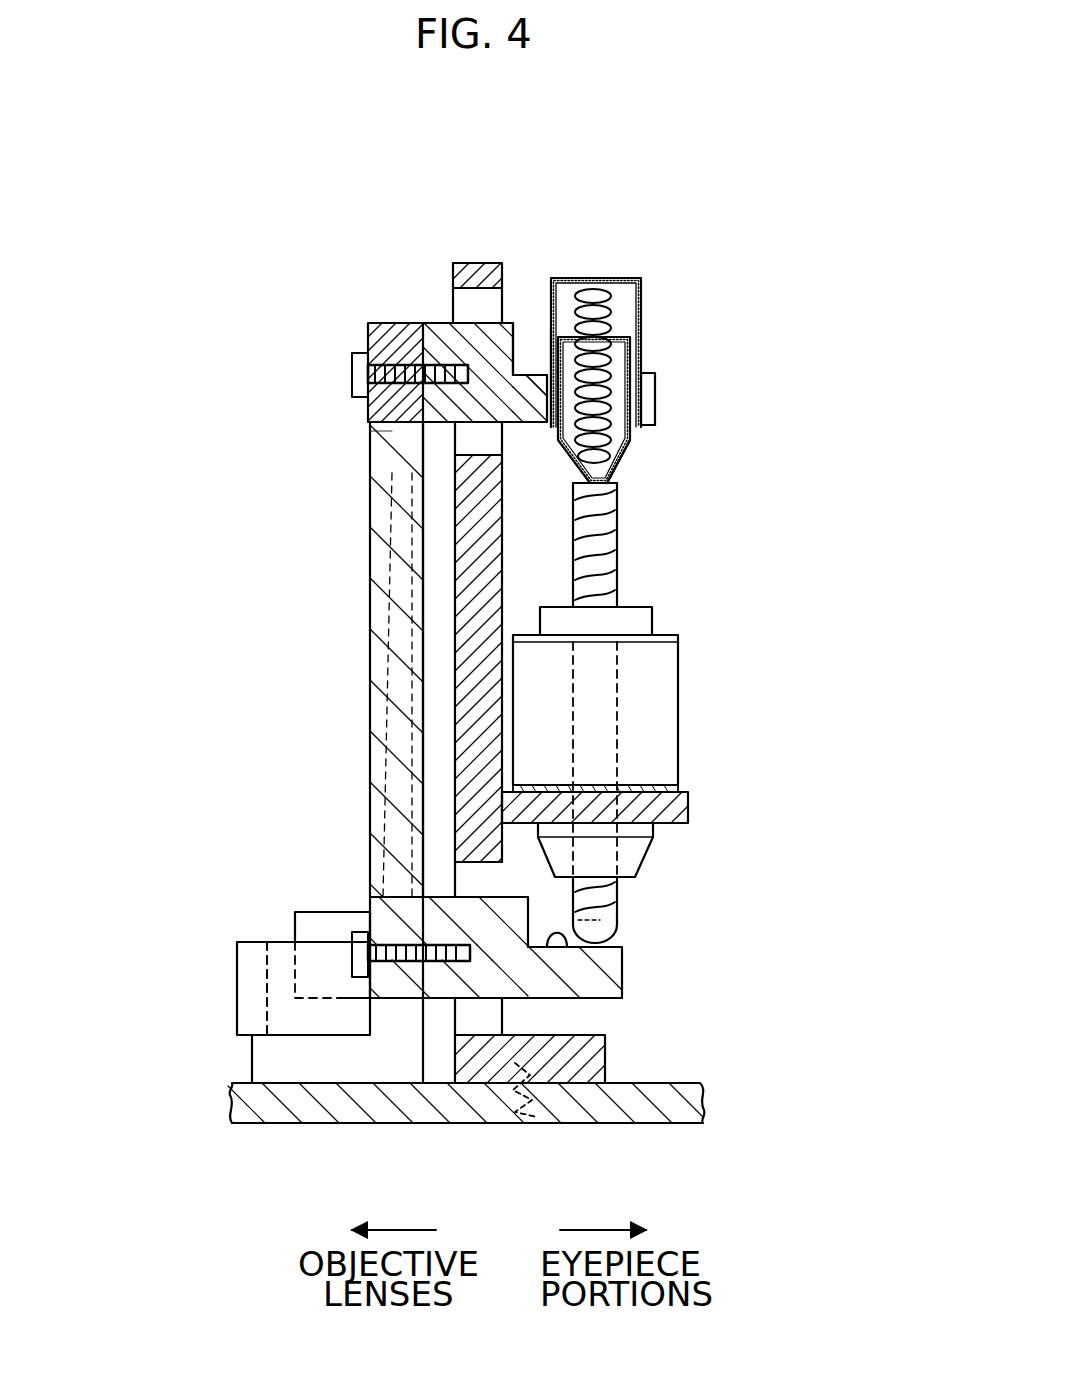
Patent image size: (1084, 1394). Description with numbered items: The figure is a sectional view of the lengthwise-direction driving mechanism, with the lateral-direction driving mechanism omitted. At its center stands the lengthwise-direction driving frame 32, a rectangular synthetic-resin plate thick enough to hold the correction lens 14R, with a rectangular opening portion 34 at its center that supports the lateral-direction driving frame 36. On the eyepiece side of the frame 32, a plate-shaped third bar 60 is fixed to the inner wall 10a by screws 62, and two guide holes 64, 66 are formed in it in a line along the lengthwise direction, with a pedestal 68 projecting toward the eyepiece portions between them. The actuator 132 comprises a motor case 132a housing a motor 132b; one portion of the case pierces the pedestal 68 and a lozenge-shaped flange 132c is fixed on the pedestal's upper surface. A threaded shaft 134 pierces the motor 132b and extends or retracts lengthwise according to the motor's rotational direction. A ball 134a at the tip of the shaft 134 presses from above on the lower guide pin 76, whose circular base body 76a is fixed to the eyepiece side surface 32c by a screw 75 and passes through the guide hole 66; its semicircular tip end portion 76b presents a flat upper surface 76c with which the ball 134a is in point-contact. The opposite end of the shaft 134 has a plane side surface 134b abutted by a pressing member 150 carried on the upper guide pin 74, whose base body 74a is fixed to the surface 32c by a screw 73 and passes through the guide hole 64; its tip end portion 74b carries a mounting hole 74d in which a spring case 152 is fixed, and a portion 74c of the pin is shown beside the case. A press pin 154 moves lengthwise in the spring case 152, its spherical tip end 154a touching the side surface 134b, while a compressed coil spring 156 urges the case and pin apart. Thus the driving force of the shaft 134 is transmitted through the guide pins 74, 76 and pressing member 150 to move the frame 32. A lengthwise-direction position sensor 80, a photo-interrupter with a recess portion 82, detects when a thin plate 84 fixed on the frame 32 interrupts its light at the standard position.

The inner wall 10a is at (645, 1122).
The correction lens 14R is at (380, 712).
The lengthwise-direction driving frame 32 is at (360, 351).
The eyepiece side surface 32c is at (427, 322).
The opening portion 34 is at (390, 432).
The lateral-direction driving frame 36 is at (382, 462).
The third bar 60 is at (478, 261).
The screw 62 is at (523, 1117).
The guide hole 64 is at (453, 290).
The guide hole 66 is at (478, 1024).
The pedestal 68 is at (688, 810).
The screw 73 is at (352, 373).
The upper guide pin 74 is at (657, 400).
The base body 74a is at (518, 358).
The tip end portion 74b is at (535, 398).
The flange of eyepiece tube 74c is at (655, 375).
The mounting hole 74d is at (632, 430).
The screw 75 is at (352, 936).
The lower guide pin 76 is at (626, 970).
The base body 76a is at (442, 910).
The tip end portion 76b is at (600, 992).
The upper surface 76c is at (555, 935).
The lengthwise-direction position sensor 80 is at (237, 991).
The recess portion 82 is at (268, 1008).
The thin plate 84 is at (295, 913).
The focusing block 132 is at (683, 650).
The motor case 132a is at (680, 720).
The motor 132b is at (633, 853).
The flange 132c is at (665, 776).
The shaft 134 is at (620, 572).
The ball 134a is at (600, 920).
The side surface 134b is at (618, 480).
The pressing member 150 is at (647, 301).
The spring case 152 is at (533, 338).
The press pin 154 is at (590, 456).
The tip end 154a is at (598, 484).
The coil spring 156 is at (622, 445).